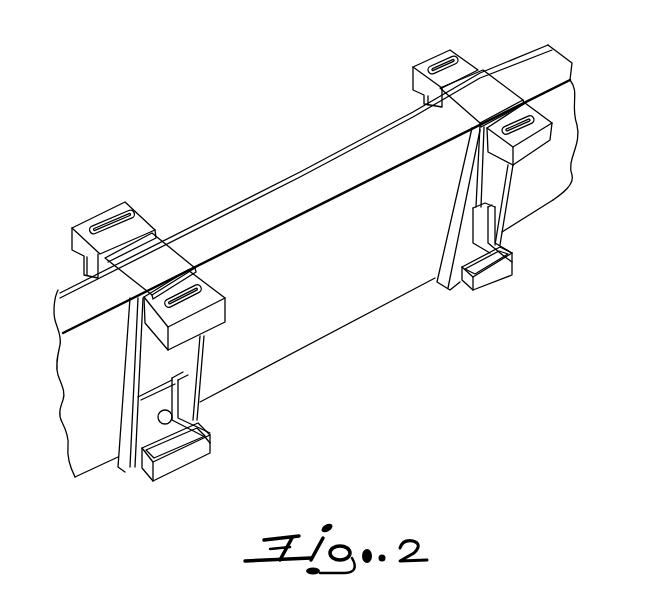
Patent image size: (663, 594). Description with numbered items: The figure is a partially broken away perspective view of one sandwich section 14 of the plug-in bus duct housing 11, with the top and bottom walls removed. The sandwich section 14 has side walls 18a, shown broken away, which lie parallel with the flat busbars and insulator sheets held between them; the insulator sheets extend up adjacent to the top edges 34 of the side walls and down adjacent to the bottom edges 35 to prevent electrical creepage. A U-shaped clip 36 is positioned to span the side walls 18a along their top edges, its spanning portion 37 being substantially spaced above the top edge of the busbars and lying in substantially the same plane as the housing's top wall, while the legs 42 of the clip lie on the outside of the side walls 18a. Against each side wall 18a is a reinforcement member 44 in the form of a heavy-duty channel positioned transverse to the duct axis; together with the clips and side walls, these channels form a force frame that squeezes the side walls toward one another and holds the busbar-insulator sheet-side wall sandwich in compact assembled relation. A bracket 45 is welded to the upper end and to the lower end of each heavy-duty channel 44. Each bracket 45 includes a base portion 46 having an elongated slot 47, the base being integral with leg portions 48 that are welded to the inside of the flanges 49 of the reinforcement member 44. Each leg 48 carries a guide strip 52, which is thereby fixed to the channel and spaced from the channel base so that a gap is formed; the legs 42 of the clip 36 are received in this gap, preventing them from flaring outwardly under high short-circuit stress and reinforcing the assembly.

The housing 11 is at (340, 334).
The sandwich section 14 is at (318, 180).
The side wall 18a is at (317, 326).
The top edge 34 is at (236, 222).
The bottom edge 35 is at (75, 477).
The U-shaped clip 36 is at (174, 248).
The spanning portion 37 is at (470, 98).
The leg 42 is at (196, 270).
The reinforcement member 44 is at (130, 368).
The bracket 45 is at (88, 216).
The base portion 46 is at (118, 210).
The elongated slot 47 is at (72, 235).
The leg portion 48 is at (185, 405).
The flange 49 is at (203, 381).
The guide strip 52 is at (203, 433).